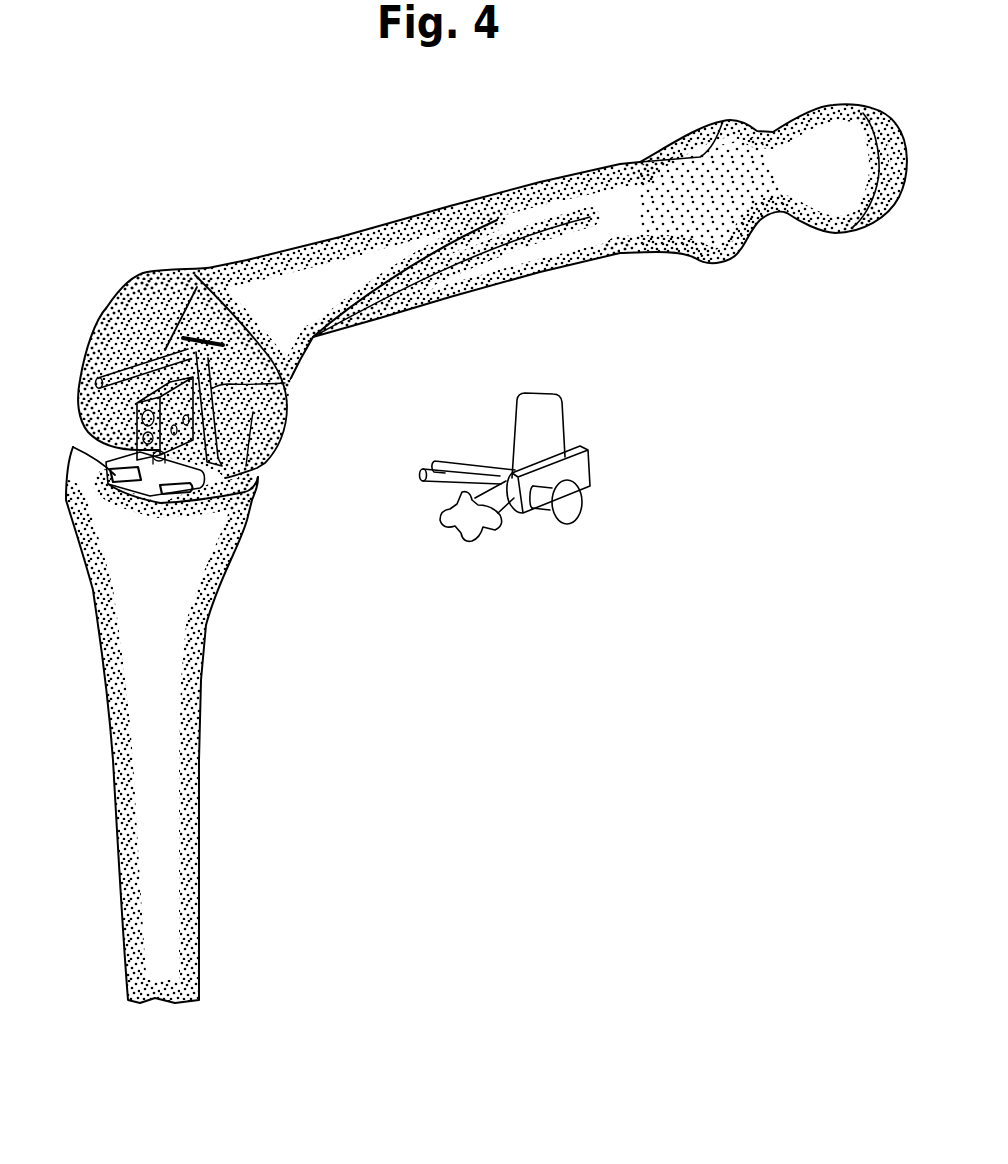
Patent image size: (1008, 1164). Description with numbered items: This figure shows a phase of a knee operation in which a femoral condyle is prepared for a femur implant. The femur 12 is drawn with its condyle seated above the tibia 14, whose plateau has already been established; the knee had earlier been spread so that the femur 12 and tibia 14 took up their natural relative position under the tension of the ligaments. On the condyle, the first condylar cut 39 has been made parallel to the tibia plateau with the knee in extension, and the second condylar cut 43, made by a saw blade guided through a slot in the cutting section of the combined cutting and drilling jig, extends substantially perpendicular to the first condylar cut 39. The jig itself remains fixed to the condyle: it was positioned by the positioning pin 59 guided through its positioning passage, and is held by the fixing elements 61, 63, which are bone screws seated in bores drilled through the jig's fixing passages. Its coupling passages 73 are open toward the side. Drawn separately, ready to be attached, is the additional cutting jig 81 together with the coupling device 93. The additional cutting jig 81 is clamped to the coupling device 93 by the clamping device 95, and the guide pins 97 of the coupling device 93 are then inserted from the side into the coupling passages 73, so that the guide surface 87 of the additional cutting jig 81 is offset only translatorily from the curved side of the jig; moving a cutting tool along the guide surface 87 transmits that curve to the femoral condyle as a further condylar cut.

The femur 12 is at (478, 205).
The tibia 14 is at (183, 838).
The first condylar cut 39 is at (285, 383).
The second condylar cut 43 is at (257, 464).
The positioning pin 59 is at (107, 325).
The fixing element 61 is at (142, 418).
The fixing element 63 is at (100, 483).
The coupling passages 73 is at (177, 432).
The additional cutting jig 81 is at (537, 467).
The guide surface 87 is at (532, 412).
The coupling device 93 is at (529, 520).
The clamping device 95 is at (470, 540).
The guide pins 97 is at (441, 473).